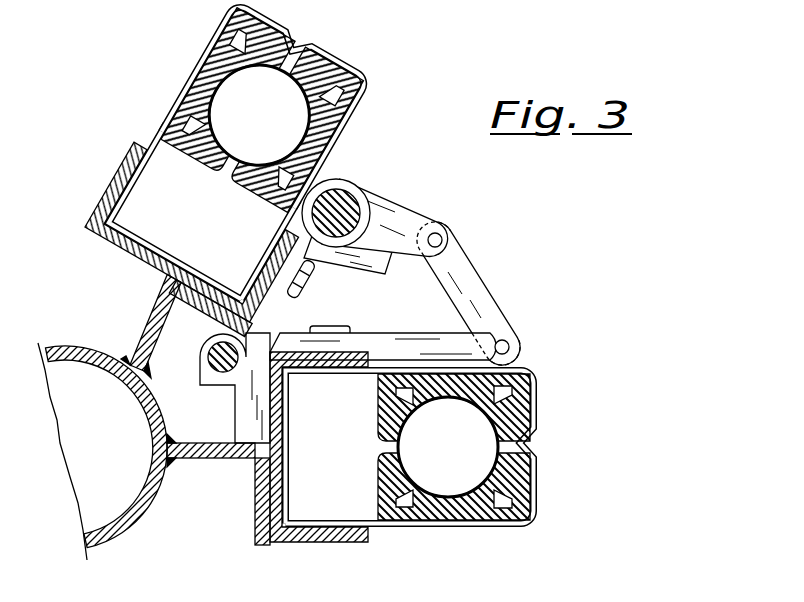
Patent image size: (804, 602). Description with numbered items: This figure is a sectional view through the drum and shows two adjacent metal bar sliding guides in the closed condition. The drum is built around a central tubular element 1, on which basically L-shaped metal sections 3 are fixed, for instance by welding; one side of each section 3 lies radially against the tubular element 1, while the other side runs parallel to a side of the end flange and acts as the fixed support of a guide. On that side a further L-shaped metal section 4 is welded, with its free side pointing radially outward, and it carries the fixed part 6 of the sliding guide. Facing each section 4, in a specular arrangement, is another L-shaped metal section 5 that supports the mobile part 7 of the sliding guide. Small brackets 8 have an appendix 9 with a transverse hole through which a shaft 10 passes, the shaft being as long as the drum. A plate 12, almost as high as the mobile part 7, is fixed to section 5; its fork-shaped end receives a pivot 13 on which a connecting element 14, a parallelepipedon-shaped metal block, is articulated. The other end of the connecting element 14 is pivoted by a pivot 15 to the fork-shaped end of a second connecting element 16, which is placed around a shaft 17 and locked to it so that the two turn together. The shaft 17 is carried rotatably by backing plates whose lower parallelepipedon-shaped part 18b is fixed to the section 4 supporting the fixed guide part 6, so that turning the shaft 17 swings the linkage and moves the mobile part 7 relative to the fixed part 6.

The central tubular element 1 is at (88, 548).
The L-shaped metal section 3 is at (140, 323).
The metal section 4 is at (265, 263).
The metal section 5 is at (130, 157).
The fixed part of the sliding guide 6 is at (345, 63).
The mobile part of the sliding guide 7 is at (221, 15).
The small bracket 8 is at (236, 458).
The appendix 9 is at (215, 378).
The shaft 10 is at (207, 352).
The plate 12 is at (435, 332).
The pivot 13 is at (510, 347).
The connecting element 14 is at (471, 262).
The pivot 15 is at (450, 238).
The connecting element 16 is at (400, 206).
The shaft 17 is at (350, 190).
The lower parallelepipedon-shaped part of backing plate 18b is at (314, 278).